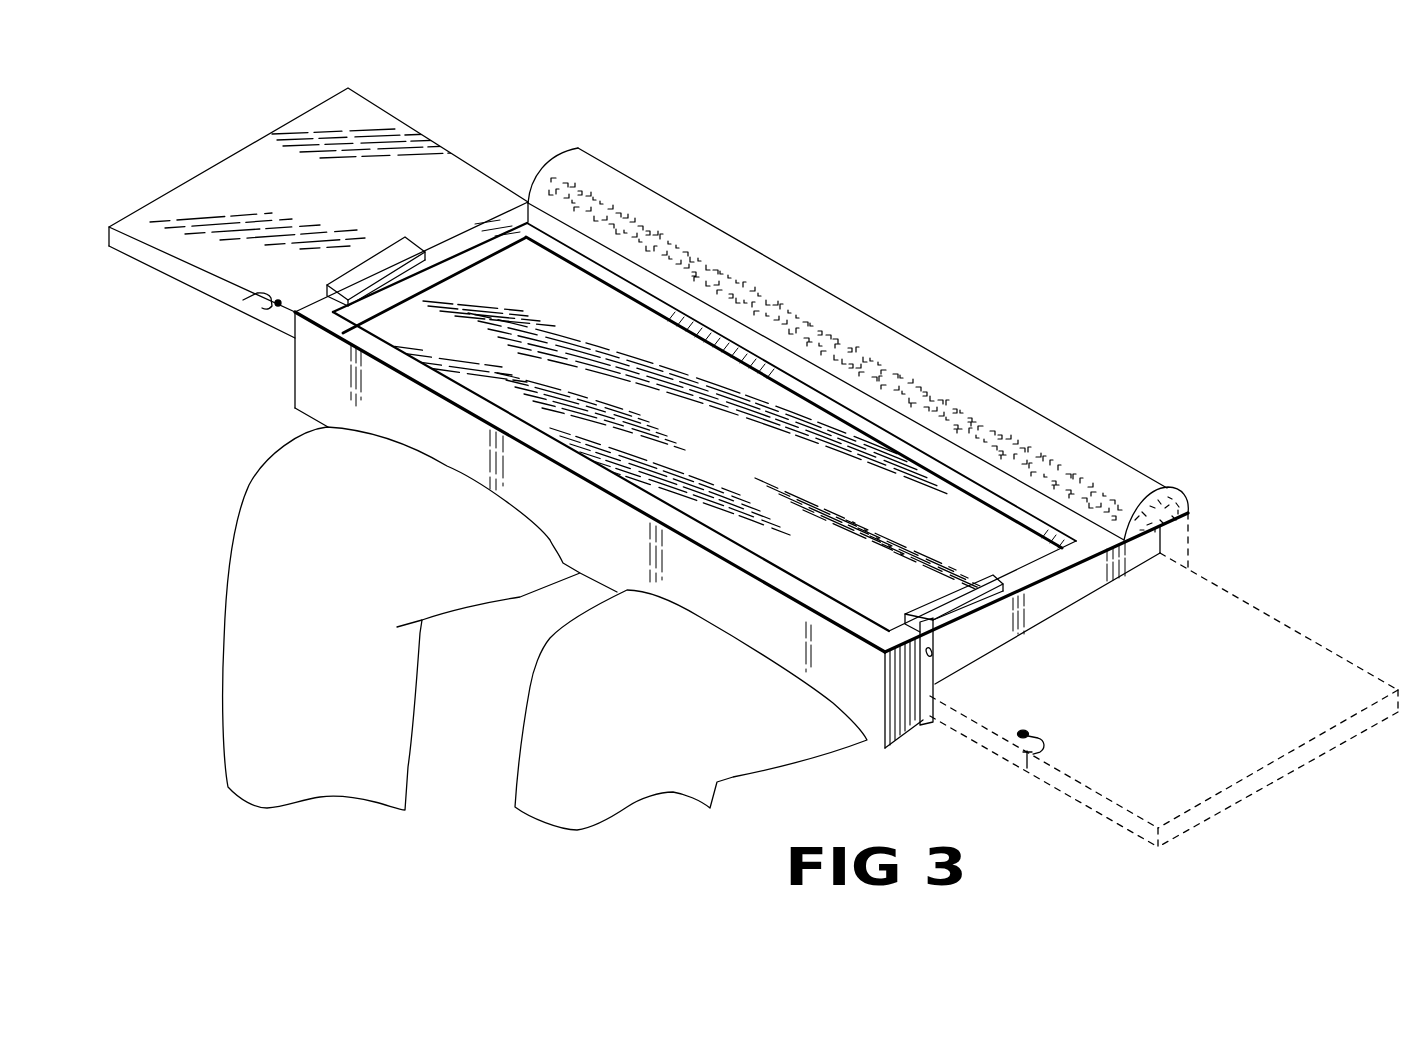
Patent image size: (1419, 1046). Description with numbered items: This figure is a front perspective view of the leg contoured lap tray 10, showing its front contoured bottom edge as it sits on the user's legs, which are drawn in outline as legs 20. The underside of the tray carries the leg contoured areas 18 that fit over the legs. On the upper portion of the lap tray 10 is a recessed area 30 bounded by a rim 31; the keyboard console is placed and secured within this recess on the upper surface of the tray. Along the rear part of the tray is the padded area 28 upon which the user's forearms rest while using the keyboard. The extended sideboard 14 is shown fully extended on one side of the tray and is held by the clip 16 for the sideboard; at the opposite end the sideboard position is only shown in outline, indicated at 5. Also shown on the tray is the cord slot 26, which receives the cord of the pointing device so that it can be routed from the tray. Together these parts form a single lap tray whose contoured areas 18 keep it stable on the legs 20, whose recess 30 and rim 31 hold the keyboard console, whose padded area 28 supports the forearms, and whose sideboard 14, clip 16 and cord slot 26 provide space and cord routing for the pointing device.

The support surface panel 5 is at (1328, 585).
The leg contoured lap tray 10 is at (862, 688).
The extended sideboard 14 is at (455, 178).
The clip 16 is at (387, 257).
The leg contoured areas 18 is at (827, 690).
The user's legs 20 is at (266, 499).
The cord slot 26 is at (1030, 733).
The padded area 28 is at (1063, 426).
The recessed area 30 is at (972, 522).
The rim 31 is at (739, 557).